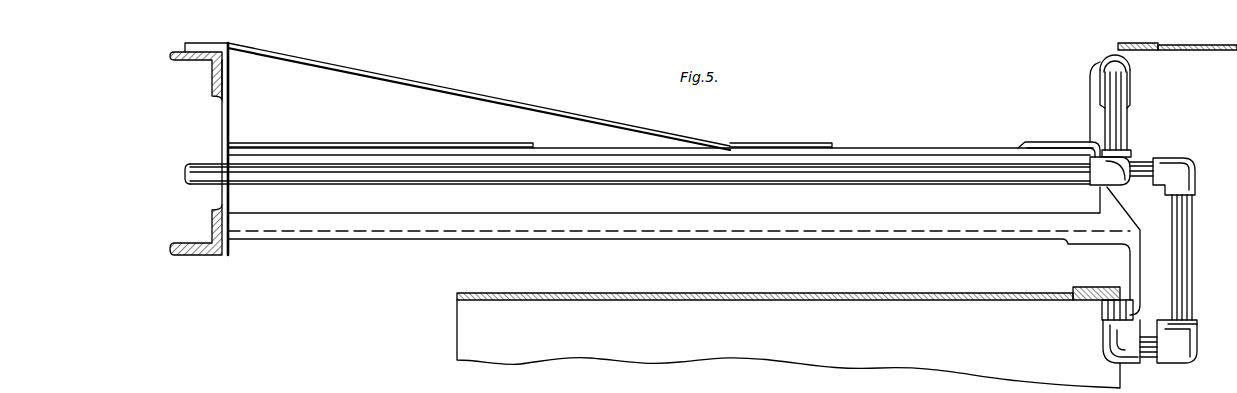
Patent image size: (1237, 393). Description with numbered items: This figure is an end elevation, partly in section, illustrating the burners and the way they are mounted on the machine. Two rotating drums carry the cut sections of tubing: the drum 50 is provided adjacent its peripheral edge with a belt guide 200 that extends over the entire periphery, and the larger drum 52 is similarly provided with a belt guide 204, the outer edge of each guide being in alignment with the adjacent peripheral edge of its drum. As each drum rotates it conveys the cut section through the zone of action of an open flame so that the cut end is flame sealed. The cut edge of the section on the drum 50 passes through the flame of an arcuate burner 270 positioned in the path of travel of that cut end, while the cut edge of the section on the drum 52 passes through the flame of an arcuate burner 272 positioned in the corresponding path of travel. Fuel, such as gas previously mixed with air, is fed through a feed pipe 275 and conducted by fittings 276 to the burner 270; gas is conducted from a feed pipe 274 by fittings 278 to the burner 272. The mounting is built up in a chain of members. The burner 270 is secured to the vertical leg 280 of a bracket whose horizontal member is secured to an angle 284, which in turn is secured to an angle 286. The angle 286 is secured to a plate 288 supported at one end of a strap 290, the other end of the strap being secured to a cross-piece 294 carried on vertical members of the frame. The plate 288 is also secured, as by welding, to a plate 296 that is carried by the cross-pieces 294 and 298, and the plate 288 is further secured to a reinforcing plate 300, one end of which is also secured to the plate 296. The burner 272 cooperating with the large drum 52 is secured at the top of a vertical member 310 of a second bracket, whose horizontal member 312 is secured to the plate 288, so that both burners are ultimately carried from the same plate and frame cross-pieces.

The drum 50 is at (983, 286).
The drum 52 is at (1210, 45).
The belt guide 200 is at (1080, 281).
The belt guide 204 is at (1141, 36).
The arcuate burner 270 is at (1103, 319).
The arcuate burner 272 is at (1130, 57).
The feed pipe 274 is at (615, 176).
The feed pipe 275 is at (1138, 163).
The fittings 276 is at (1193, 269).
The fittings 278 is at (1125, 129).
The vertical leg 280 is at (1139, 258).
The angle 284 is at (724, 229).
The angle 286 is at (837, 205).
The plate 288 is at (897, 152).
The strap 290 is at (434, 86).
The cross-piece 294 is at (202, 62).
The plate 296 is at (229, 129).
The cross-piece 298 is at (192, 243).
The reinforcing plate 300 is at (375, 146).
The vertical member 310 is at (1092, 87).
The horizontal member 312 is at (1036, 146).